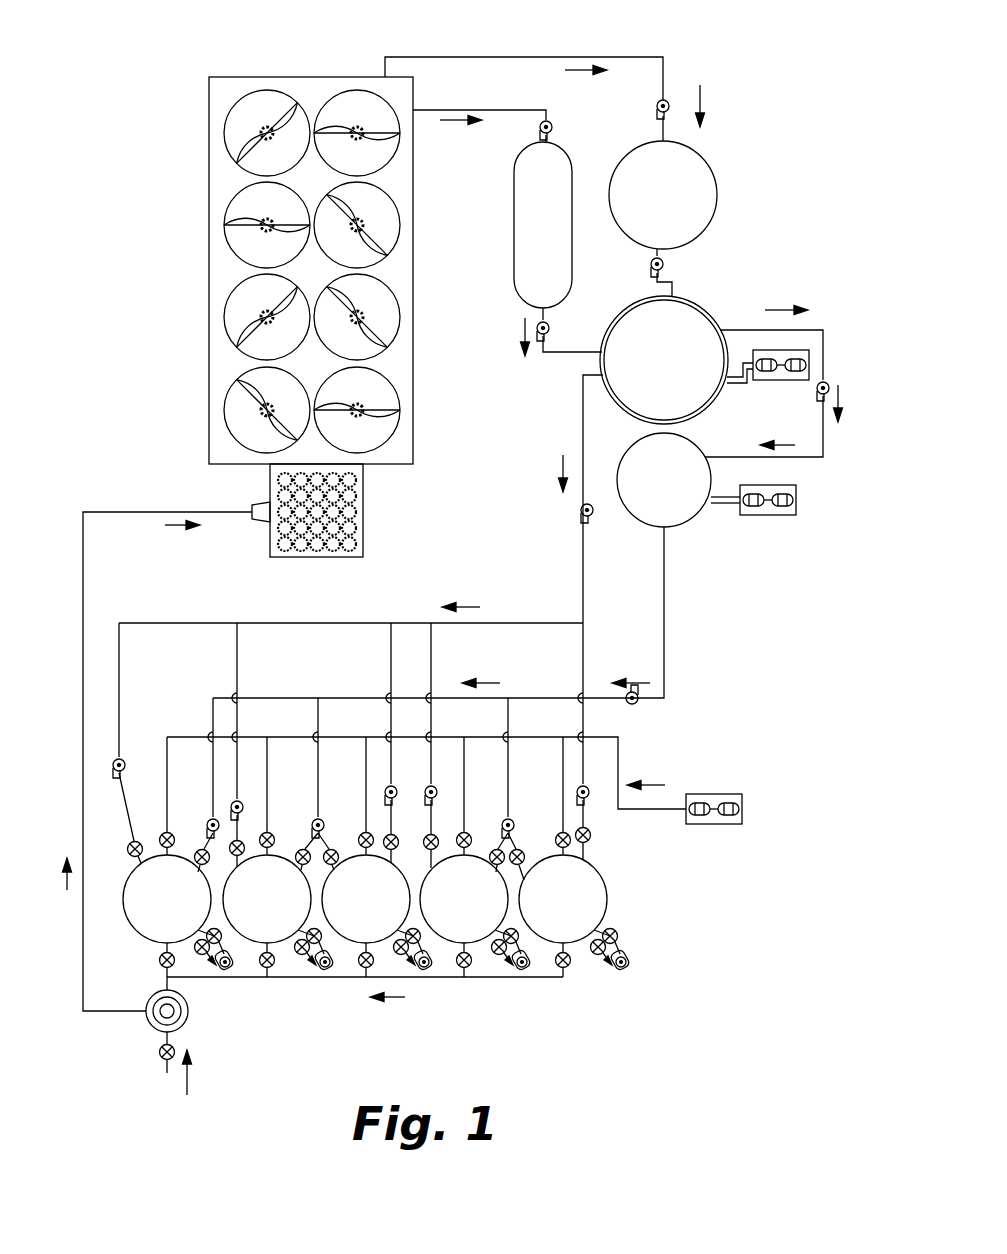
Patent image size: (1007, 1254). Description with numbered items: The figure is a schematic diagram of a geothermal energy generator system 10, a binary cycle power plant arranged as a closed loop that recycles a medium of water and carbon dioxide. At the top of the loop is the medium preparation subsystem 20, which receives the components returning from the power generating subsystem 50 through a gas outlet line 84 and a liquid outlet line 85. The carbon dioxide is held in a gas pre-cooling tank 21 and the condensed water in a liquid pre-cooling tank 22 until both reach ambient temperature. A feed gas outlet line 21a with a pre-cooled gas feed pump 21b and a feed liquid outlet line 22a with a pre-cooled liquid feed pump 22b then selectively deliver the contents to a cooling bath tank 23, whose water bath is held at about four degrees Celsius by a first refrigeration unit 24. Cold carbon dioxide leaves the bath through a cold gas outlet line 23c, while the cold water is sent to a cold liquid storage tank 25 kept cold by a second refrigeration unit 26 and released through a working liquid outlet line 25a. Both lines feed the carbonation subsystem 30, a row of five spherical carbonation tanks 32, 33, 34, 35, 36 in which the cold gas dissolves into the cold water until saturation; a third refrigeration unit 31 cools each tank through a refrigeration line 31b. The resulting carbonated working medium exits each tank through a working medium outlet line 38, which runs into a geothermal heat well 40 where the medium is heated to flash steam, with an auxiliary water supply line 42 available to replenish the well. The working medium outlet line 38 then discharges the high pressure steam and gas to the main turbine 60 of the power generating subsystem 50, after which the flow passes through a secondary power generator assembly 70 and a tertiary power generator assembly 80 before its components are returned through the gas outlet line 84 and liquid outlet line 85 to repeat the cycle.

The geothermal energy generator system 10 is at (118, 97).
The medium preparation subsystem 20 is at (776, 122).
The gas pre-cooling tank 21 is at (514, 214).
The feed gas outlet line 21a is at (553, 356).
The pre-cooled gas feed pump 21b is at (552, 326).
The liquid pre-cooling tank 22 is at (718, 188).
The feed liquid outlet line 22a is at (657, 278).
The pre-cooled liquid feed pump 22b is at (654, 262).
The cooling bath tank 23 is at (728, 300).
The cold gas outlet line 23c is at (582, 430).
The first refrigeration unit 24 is at (795, 350).
The cold liquid storage tank 25 is at (684, 528).
The working liquid outlet line 25a is at (668, 638).
The second refrigeration unit 26 is at (772, 515).
The carbonation subsystem 30 is at (447, 802).
The third refrigeration unit 31 is at (742, 795).
The refrigeration line 31b is at (620, 762).
The carbonation tank 32 is at (179, 857).
The carbonation tank 33 is at (279, 857).
The carbonation tank 34 is at (378, 857).
The carbonation tank 35 is at (476, 857).
The carbonation tank 36 is at (570, 857).
The working medium outlet line 38 is at (80, 574).
The geothermal heat well 40 is at (189, 1014).
The auxiliary water supply line 42 is at (166, 1068).
The power generating subsystem 50 is at (118, 470).
The main turbine 60 is at (262, 522).
The secondary power generator assembly 70 is at (402, 516).
The tertiary power generator assembly 80 is at (168, 292).
The gas outlet line 84 is at (492, 110).
The liquid outlet line 85 is at (530, 57).